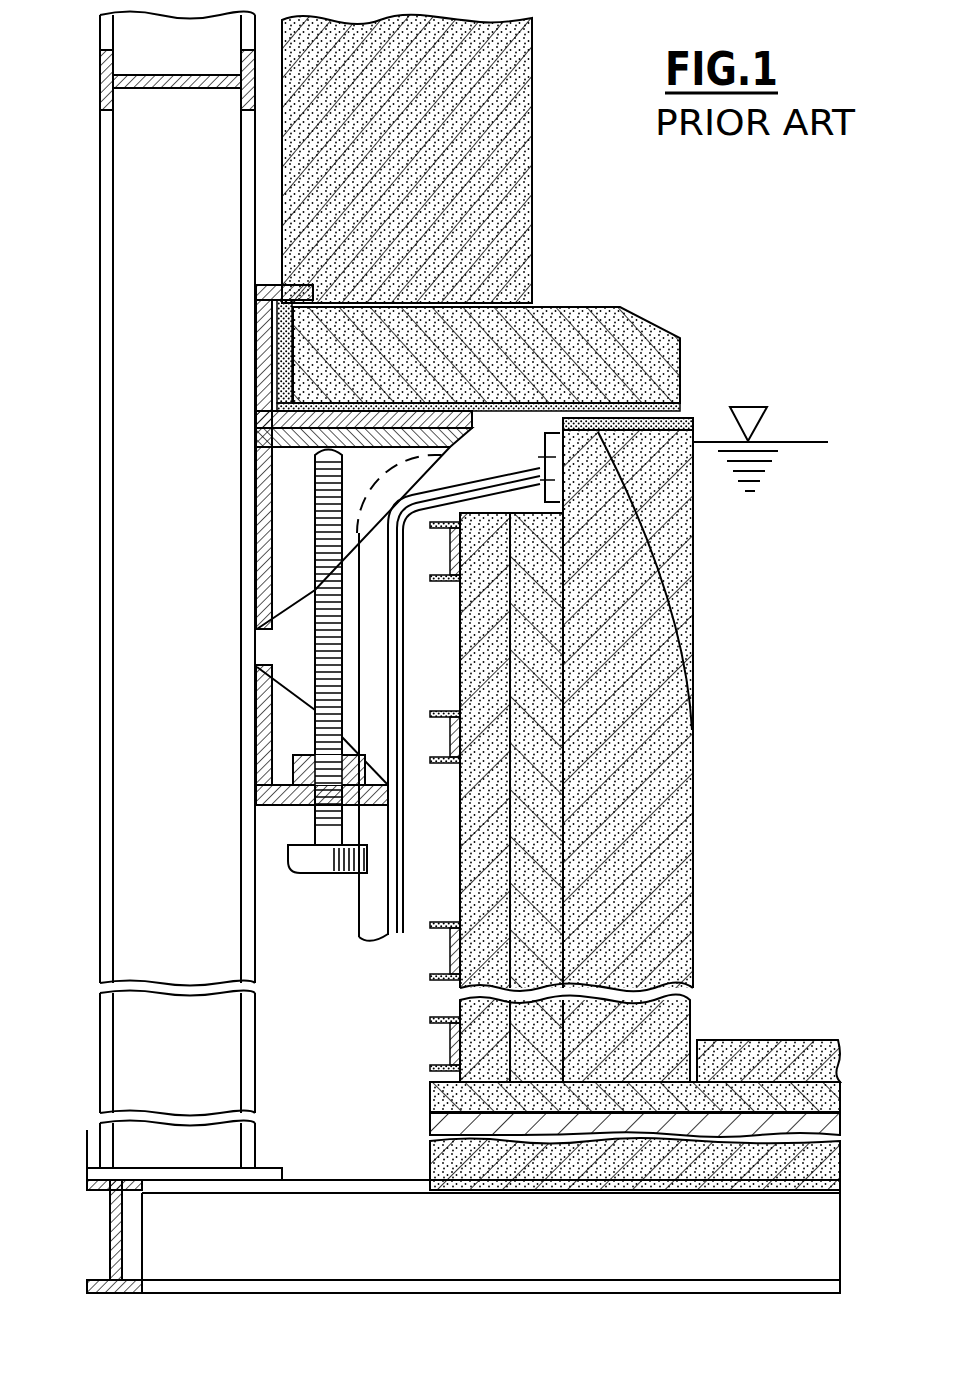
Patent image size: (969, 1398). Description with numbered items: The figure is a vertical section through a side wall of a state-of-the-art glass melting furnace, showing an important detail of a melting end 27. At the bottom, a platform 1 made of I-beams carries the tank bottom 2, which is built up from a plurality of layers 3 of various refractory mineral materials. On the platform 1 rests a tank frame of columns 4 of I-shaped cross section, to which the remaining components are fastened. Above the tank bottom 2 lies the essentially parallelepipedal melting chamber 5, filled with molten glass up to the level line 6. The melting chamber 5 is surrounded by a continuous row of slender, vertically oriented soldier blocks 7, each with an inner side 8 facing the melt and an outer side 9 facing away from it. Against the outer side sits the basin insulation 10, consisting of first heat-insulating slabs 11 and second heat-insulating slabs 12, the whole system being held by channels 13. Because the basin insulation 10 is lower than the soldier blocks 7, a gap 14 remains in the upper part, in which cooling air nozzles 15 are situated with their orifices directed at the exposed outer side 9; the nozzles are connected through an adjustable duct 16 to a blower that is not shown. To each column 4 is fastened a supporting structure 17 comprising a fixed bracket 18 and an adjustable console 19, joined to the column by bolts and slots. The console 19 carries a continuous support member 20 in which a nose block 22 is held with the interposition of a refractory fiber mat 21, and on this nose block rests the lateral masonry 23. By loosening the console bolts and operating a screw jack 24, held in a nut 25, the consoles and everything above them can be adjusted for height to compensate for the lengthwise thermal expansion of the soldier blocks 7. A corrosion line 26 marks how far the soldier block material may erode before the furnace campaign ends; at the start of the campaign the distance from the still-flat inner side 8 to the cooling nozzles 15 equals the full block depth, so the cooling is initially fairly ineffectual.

The platform 1 is at (354, 1203).
The tank bottom 2 is at (801, 1004).
The layers 3 is at (858, 1040).
The columns 4 is at (233, 1055).
The melting chamber 5 is at (797, 721).
The level line 6 is at (800, 440).
The soldier blocks 7 is at (672, 836).
The inner side 8 is at (655, 703).
The outer side 9 is at (552, 962).
The basin insulation 10 is at (451, 996).
The first heat-insulating slabs 11 is at (540, 622).
The second heat-insulating slabs 12 is at (486, 812).
The channels 13 is at (447, 925).
The gap 14 is at (492, 432).
The cooling air nozzles 15 is at (536, 470).
The adjustable duct 16 is at (386, 904).
The supporting structure 17 is at (212, 545).
The fixed bracket 18 is at (293, 735).
The console 19 is at (262, 521).
The continuous support member 20 is at (257, 356).
The refractory fiber mat 21 is at (692, 407).
The nose block 22 is at (658, 326).
The lateral masonry 23 is at (510, 150).
The screw jack 24 is at (319, 662).
The nut 25 is at (293, 770).
The corrosion line 26 is at (692, 570).
The melting end 27 is at (531, 209).